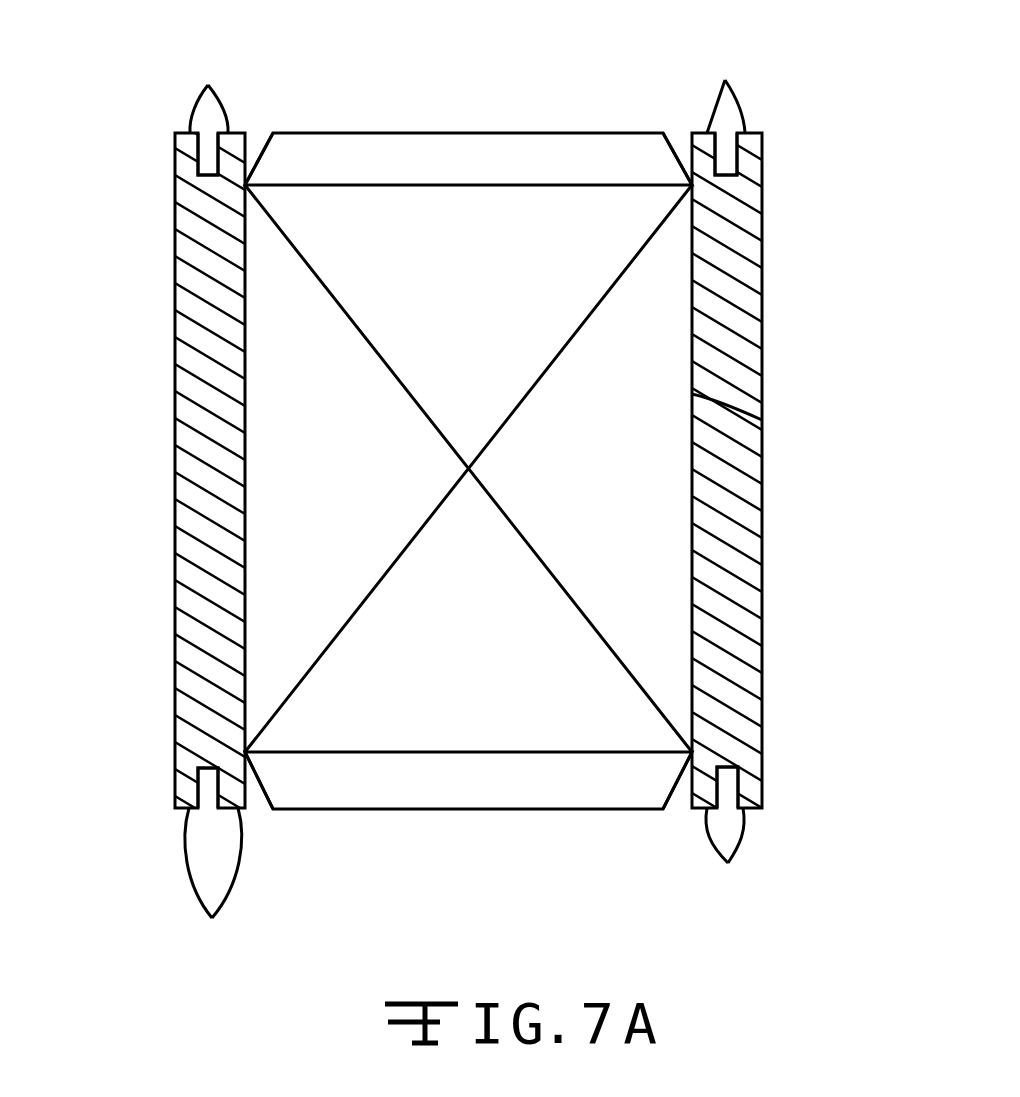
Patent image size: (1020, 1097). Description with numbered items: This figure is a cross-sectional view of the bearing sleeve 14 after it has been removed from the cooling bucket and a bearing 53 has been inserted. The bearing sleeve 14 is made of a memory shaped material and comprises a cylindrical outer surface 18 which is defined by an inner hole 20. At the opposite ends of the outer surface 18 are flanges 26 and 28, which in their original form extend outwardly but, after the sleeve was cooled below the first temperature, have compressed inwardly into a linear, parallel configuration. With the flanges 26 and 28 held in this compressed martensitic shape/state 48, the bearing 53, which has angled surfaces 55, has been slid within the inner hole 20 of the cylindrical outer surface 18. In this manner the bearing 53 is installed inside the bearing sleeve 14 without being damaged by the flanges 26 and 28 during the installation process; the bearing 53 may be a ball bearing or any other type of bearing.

The bearing sleeve 14 is at (835, 172).
The cylindrical outer surface 18 is at (175, 418).
The inner hole 20 is at (762, 420).
The flange 26 is at (208, 85).
The flange 28 is at (212, 918).
The compressed martensitic shape/state 48 is at (178, 133).
The bearing 53 is at (482, 131).
The angled surfaces 55 is at (263, 133).